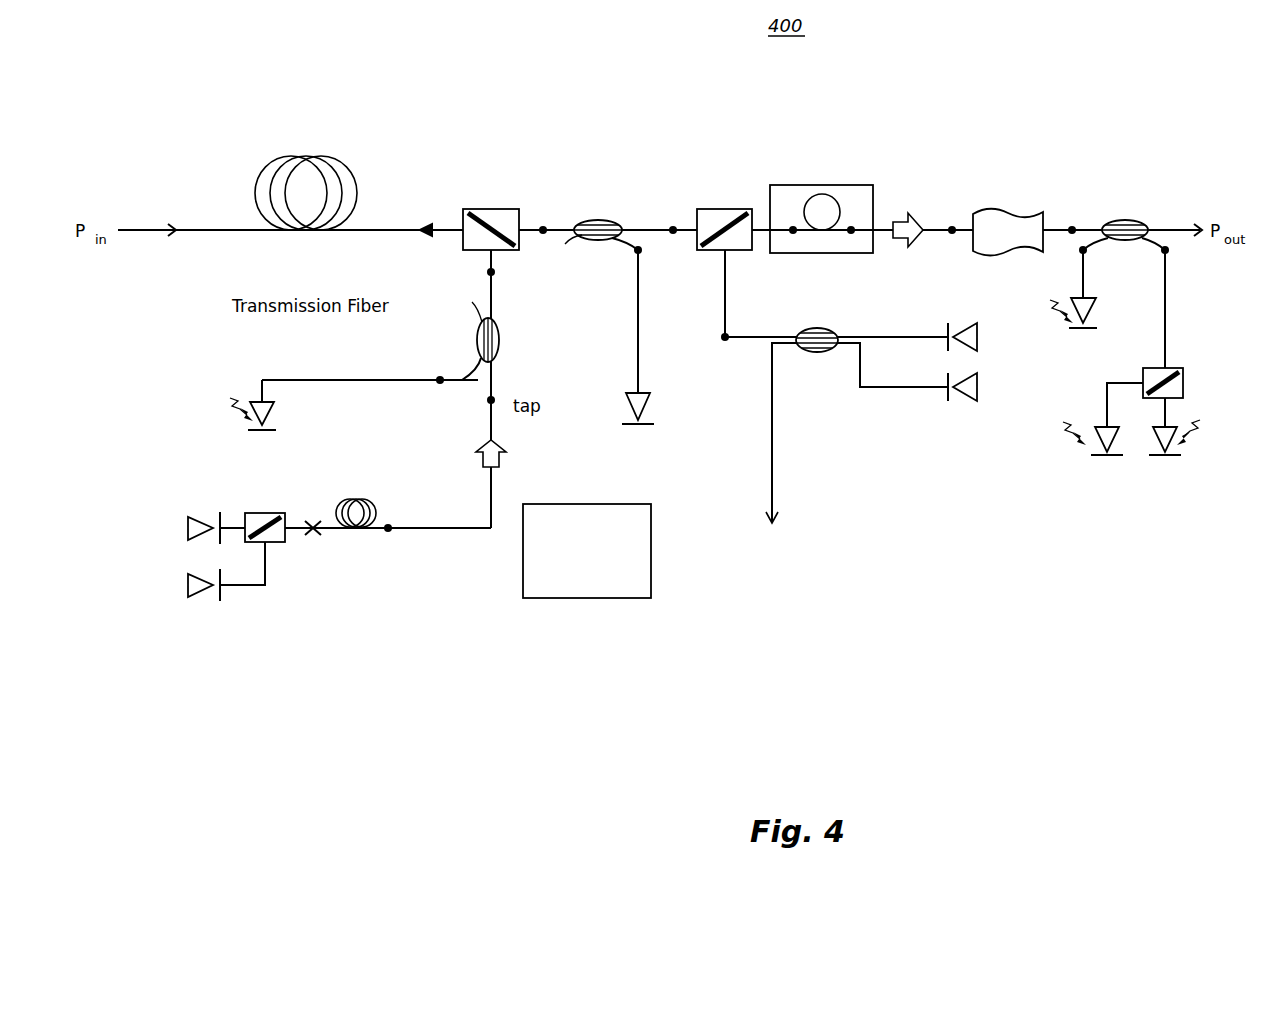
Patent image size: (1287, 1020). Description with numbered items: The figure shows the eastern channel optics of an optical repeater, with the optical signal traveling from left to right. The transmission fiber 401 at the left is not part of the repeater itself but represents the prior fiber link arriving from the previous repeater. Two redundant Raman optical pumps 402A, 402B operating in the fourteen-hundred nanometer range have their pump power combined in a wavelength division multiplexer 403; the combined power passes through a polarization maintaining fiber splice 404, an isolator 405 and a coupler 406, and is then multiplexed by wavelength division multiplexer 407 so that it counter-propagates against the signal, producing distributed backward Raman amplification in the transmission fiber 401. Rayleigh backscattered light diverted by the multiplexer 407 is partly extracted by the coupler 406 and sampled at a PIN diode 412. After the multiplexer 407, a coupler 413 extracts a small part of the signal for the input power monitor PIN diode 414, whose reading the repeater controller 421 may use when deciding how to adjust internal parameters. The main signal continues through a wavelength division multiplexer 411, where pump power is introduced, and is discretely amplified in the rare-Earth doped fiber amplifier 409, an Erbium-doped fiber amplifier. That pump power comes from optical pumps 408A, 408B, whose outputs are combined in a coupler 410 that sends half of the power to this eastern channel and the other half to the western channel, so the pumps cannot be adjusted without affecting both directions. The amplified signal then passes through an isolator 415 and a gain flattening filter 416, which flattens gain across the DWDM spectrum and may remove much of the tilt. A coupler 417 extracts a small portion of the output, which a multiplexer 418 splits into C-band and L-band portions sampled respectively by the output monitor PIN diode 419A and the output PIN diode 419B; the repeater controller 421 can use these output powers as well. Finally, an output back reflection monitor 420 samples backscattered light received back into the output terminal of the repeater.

The transmission fiber 401 is at (330, 152).
The Raman optical pump 402A is at (200, 515).
The Raman optical pump 402B is at (200, 596).
The wavelength division multiplexer 403 is at (272, 546).
The polarization maintaining fiber splice 404 is at (372, 497).
The isolator 405 is at (502, 460).
The coupler 406 is at (500, 338).
The wavelength division multiplexer 407 is at (490, 208).
The optical pump 408A is at (963, 320).
The optical pump 408B is at (978, 387).
The rare-Earth doped fiber amplifier 409 is at (838, 184).
The coupler 410 is at (815, 353).
The wavelength division multiplexer 411 is at (720, 208).
The PIN diode 412 is at (276, 416).
The coupler 413 is at (598, 220).
The input power monitor PIN diode 414 is at (665, 407).
The isolator 415 is at (900, 212).
The gain flattening filter 416 is at (1007, 212).
The coupler 417 is at (1128, 218).
The multiplexer 418 is at (1185, 378).
The output monitor PIN diode 419A is at (1083, 458).
The output PIN diode 419B is at (1190, 448).
The output back reflection monitor 420 is at (1097, 316).
The repeater controller 421 is at (569, 588).